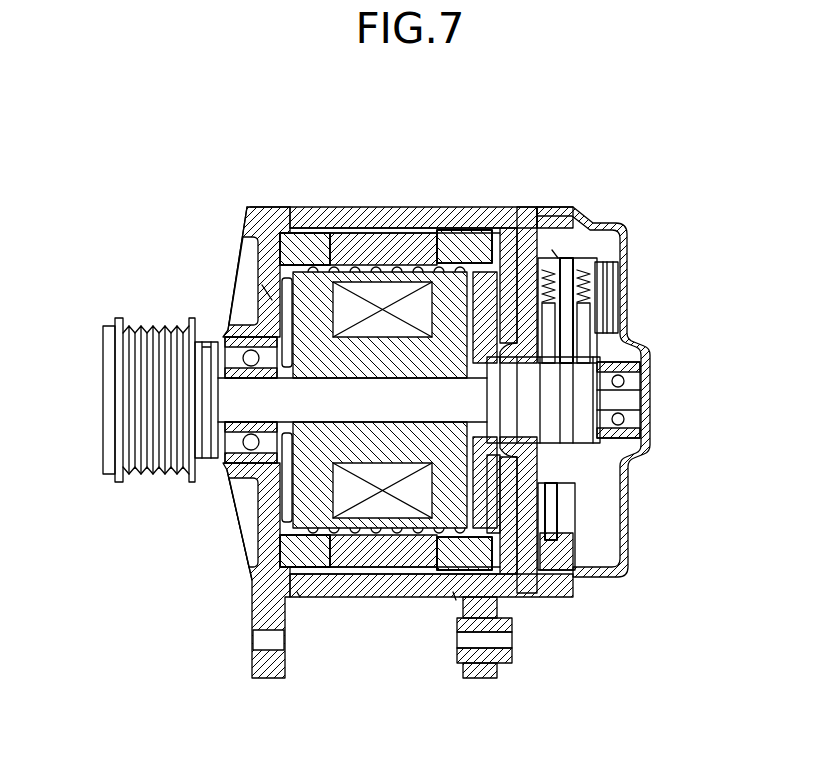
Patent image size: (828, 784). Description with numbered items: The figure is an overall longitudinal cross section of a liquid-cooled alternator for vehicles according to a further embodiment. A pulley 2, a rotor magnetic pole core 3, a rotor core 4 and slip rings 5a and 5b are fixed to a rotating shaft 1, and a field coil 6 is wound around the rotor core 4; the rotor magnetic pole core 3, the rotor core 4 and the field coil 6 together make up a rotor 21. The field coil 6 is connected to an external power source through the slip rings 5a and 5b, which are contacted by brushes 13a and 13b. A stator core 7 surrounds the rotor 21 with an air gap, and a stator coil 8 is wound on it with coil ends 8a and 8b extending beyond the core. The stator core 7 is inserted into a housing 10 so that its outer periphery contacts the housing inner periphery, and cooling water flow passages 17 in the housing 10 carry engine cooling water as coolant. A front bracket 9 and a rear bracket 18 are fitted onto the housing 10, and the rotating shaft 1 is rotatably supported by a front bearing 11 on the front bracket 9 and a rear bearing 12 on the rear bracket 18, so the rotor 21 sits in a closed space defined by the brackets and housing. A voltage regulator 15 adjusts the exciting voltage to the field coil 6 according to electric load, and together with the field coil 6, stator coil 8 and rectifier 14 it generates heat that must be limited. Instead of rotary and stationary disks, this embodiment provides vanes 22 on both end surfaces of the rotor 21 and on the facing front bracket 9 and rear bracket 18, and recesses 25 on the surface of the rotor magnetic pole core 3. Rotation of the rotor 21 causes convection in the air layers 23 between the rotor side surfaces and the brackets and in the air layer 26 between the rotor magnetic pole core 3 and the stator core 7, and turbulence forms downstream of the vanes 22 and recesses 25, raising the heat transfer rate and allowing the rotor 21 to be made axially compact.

The rotating shaft 1 is at (245, 402).
The pulley 2 is at (157, 327).
The rotor magnetic pole core 3 is at (258, 213).
The rotor core 4 is at (335, 355).
The slip ring 5a is at (565, 450).
The slip ring 5b is at (580, 412).
The field coil 6 is at (392, 580).
The stator core 7 is at (388, 268).
The stator coil 8 is at (448, 215).
The coil end 8a is at (300, 240).
The coil end 8b is at (462, 232).
The front bracket 9 is at (263, 205).
The housing 10 is at (412, 207).
The front bearing 11 is at (235, 447).
The rear bearing 12 is at (650, 367).
The brush 13a is at (610, 308).
The brush 13b is at (582, 342).
The rectifier 14 is at (557, 520).
The voltage regulator 15 is at (617, 282).
The cooling water flow passage 17 is at (510, 207).
The rear bracket 18 is at (525, 207).
The rotor 21 is at (300, 455).
The vane 22 is at (265, 290).
The air layer 23 is at (285, 512).
The recess 25 is at (368, 268).
The air layer 26 is at (348, 268).